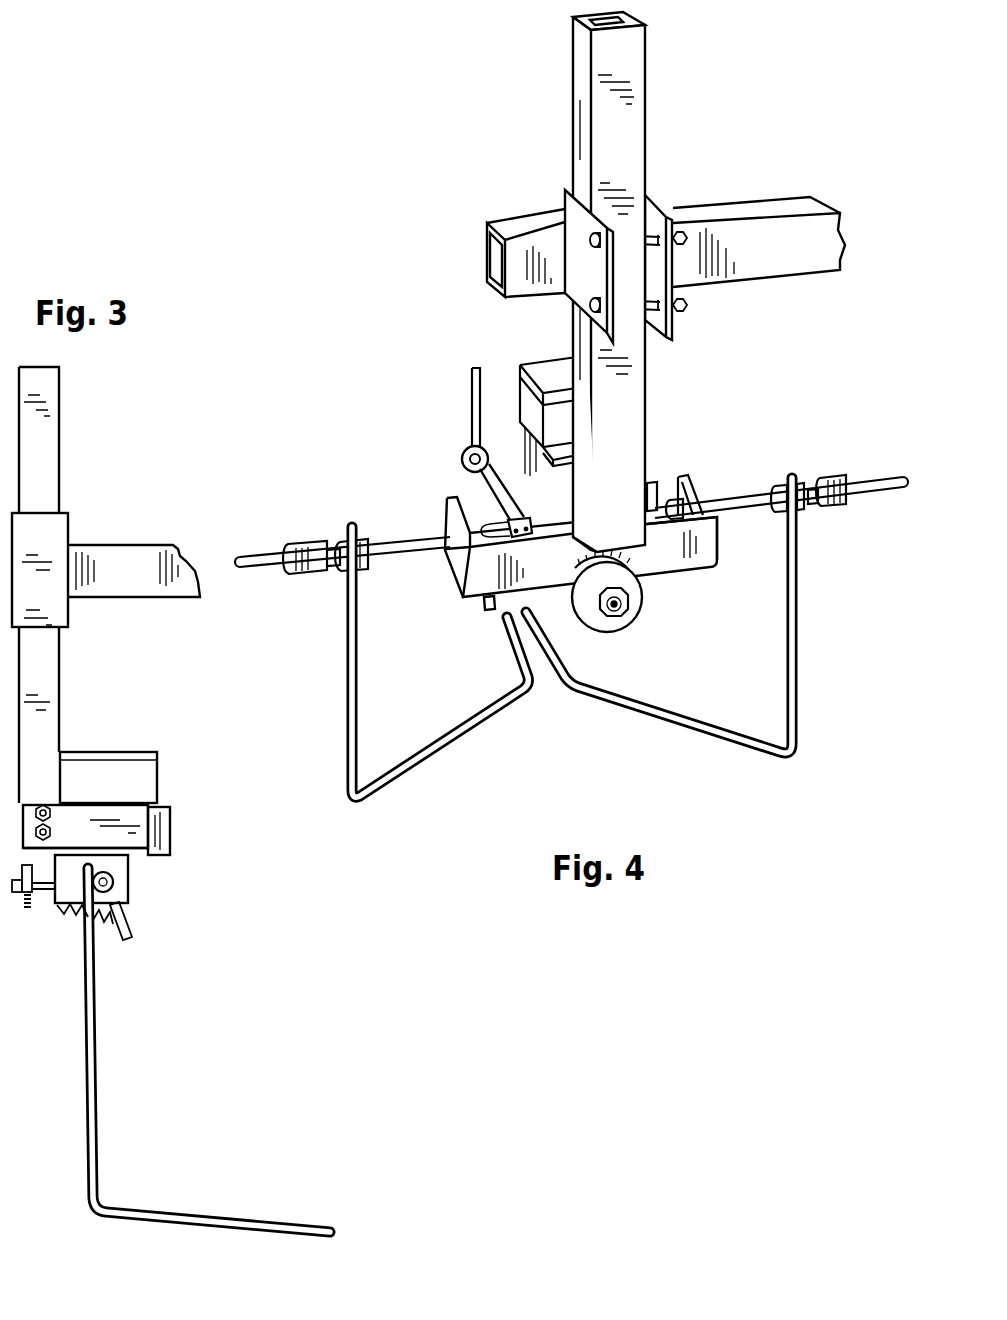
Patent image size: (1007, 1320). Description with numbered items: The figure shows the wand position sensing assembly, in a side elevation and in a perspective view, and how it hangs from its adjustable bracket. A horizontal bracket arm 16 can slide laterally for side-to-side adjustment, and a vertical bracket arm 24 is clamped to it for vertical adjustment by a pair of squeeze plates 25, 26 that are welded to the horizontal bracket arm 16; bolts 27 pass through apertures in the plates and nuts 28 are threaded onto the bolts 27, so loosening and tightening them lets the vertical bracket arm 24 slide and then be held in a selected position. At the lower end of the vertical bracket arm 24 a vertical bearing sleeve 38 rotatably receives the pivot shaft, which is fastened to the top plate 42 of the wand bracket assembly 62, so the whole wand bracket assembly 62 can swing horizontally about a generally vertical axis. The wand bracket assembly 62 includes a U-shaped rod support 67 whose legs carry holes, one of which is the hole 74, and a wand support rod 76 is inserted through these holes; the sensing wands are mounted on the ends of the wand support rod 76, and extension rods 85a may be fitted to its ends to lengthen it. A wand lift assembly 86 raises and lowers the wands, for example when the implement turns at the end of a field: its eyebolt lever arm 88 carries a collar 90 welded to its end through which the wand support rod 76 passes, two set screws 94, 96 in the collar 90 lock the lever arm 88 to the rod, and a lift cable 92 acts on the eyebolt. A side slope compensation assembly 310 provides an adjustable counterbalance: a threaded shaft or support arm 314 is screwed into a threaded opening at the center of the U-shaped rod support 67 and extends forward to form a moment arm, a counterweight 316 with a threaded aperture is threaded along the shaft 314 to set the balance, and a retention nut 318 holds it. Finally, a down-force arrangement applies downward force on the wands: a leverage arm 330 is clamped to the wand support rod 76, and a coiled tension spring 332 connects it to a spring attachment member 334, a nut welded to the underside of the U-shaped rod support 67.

In FIG. 4, the horizontal bracket arm 16 is at (752, 210).
In FIG. 3, the vertical bracket arm 24 is at (50, 443).
In FIG. 4, the vertical bracket arm 24 is at (634, 70).
In FIG. 4, the squeeze plate 25 is at (577, 232).
In FIG. 4, the squeeze plate 26 is at (650, 217).
In FIG. 4, the bolt 27 is at (578, 233).
In FIG. 4, the nut 28 is at (688, 227).
In FIG. 4, the vertical bearing sleeve 38 is at (567, 503).
In FIG. 3, the top plate 42 is at (143, 858).
In FIG. 4, the top plate 42 is at (555, 500).
In FIG. 4, the wand bracket assembly 62 is at (457, 608).
In FIG. 4, the U-shaped rod support 67 is at (703, 540).
In FIG. 3, the hole 74 is at (112, 885).
In FIG. 4, the wand support rod 76 is at (718, 514).
In FIG. 4, the extension rod 85a is at (310, 575).
In FIG. 4, the wand lift assembly 86 is at (455, 474).
In FIG. 4, the eyebolt lever arm 88 is at (493, 497).
In FIG. 4, the collar 90 is at (450, 510).
In FIG. 4, the lift cable 92 is at (472, 383).
In FIG. 4, the set screw 94 is at (527, 532).
In FIG. 4, the set screw 96 is at (515, 534).
In FIG. 4, the side slope compensation assembly 310 is at (722, 660).
In FIG. 3, the threaded shaft or support arm 314 is at (48, 875).
In FIG. 4, the threaded shaft or support arm 314 is at (620, 613).
In FIG. 3, the counterweight 316 is at (25, 872).
In FIG. 4, the counterweight 316 is at (640, 610).
In FIG. 3, the retention nut 318 is at (15, 878).
In FIG. 4, the retention nut 318 is at (617, 593).
In FIG. 3, the leverage arm 330 is at (128, 922).
In FIG. 3, the coiled tension spring 332 is at (112, 935).
In FIG. 3, the spring attachment member 334 is at (55, 905).